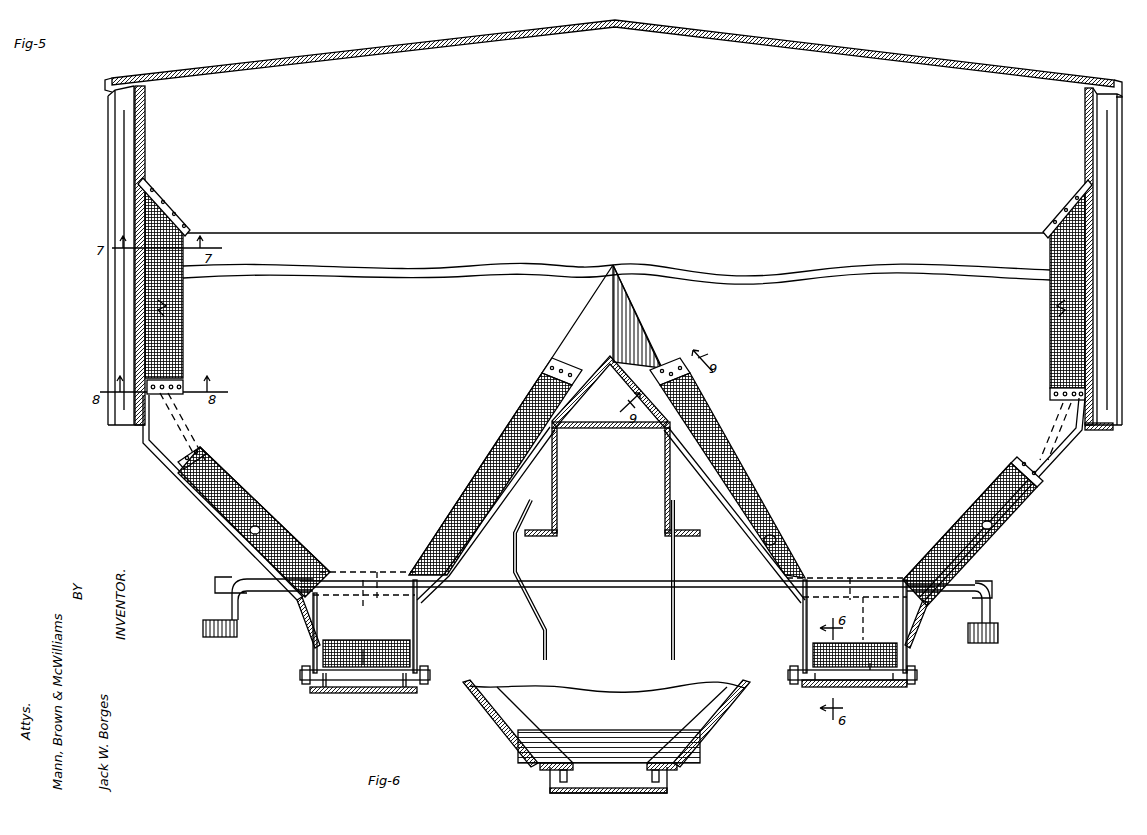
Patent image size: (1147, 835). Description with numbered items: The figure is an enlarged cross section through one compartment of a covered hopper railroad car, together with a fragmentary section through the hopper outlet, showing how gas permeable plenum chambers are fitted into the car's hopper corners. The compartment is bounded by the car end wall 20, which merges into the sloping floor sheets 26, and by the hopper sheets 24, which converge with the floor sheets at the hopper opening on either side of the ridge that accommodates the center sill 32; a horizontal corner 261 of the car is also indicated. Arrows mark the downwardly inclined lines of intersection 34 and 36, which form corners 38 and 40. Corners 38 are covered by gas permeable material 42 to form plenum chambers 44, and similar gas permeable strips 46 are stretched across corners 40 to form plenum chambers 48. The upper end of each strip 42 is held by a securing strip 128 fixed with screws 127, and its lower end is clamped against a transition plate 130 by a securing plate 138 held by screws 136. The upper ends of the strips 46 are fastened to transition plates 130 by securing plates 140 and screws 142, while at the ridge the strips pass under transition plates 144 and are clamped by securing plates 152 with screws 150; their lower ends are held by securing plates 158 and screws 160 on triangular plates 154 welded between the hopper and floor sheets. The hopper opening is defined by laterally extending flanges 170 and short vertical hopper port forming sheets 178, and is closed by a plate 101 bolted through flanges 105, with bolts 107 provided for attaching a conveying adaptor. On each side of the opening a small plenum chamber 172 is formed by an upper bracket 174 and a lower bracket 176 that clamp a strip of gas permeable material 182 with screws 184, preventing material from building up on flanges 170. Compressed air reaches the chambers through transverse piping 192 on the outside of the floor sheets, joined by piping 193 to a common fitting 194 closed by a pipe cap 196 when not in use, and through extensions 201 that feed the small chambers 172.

In FIG. 5, the car end wall 20 is at (968, 106).
In FIG. 6, the hopper sheet 24 is at (582, 697).
In FIG. 5, the floor sheet 26 is at (866, 286).
In FIG. 5, the center sill 32 is at (608, 434).
In FIG. 5, the line of intersection 34 is at (178, 303).
In FIG. 5, the line of intersection 36 is at (218, 477).
In FIG. 5, the corner 38 is at (178, 322).
In FIG. 5, the corner 40 is at (270, 543).
In FIG. 5, the gas permeable material 42 is at (163, 202).
In FIG. 5, the plenum chamber 44 is at (180, 338).
In FIG. 5, the gas permeable strip 46 is at (264, 506).
In FIG. 5, the plenum chamber 48 is at (785, 530).
In FIG. 5, the plate 101 is at (363, 693).
In FIG. 6, the plate 101 is at (667, 783).
In FIG. 5, the flange 105 is at (797, 670).
In FIG. 5, the bolt 107 is at (310, 685).
In FIG. 6, the bolt 107 is at (566, 776).
In FIG. 5, the screw 127 is at (163, 187).
In FIG. 5, the securing strip 128 is at (193, 231).
In FIG. 5, the transition plate 130 is at (167, 430).
In FIG. 5, the screw 136 is at (173, 393).
In FIG. 5, the securing plate 138 is at (178, 377).
In FIG. 5, the securing plate 140 is at (200, 457).
In FIG. 5, the screw 142 is at (195, 447).
In FIG. 5, the transition plate 144 is at (597, 297).
In FIG. 5, the securing screw 150 is at (543, 373).
In FIG. 5, the securing plate 152 is at (547, 362).
In FIG. 5, the triangular plate 154 is at (297, 603).
In FIG. 6, the triangular plate 154 is at (510, 688).
In FIG. 5, the securing plate 158 is at (310, 590).
In FIG. 5, the screw 160 is at (327, 567).
In FIG. 6, the flange 170 is at (543, 767).
In FIG. 6, the plenum chamber 172 is at (531, 758).
In FIG. 5, the upper bracket 174 is at (332, 637).
In FIG. 6, the upper bracket 174 is at (543, 740).
In FIG. 6, the lower bracket 176 is at (510, 740).
In FIG. 5, the hopper port forming sheet 178 is at (313, 648).
In FIG. 6, the hopper port forming sheet 178 is at (633, 720).
In FIG. 5, the gas permeable material 182 is at (363, 650).
In FIG. 5, the screw 184 is at (390, 653).
In FIG. 5, the piping 192 is at (625, 575).
In FIG. 5, the piping 193 is at (250, 577).
In FIG. 5, the fitting 194 is at (227, 583).
In FIG. 5, the pipe cap 196 is at (223, 637).
In FIG. 5, the extension 201 is at (400, 563).
In FIG. 5, the horizontal corner 261 is at (758, 233).